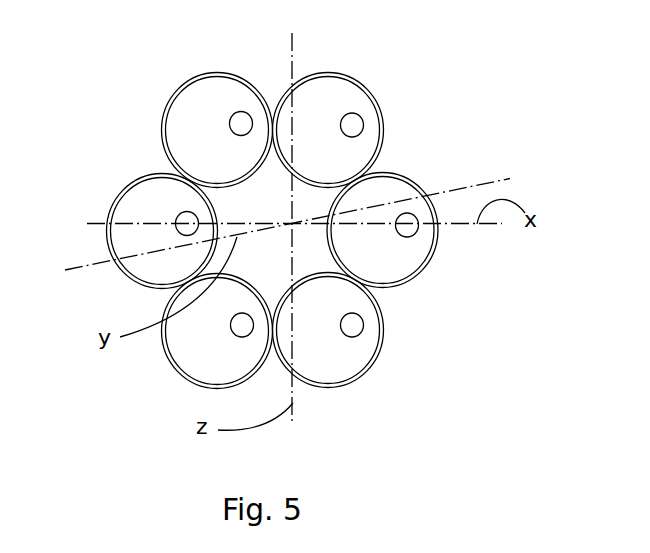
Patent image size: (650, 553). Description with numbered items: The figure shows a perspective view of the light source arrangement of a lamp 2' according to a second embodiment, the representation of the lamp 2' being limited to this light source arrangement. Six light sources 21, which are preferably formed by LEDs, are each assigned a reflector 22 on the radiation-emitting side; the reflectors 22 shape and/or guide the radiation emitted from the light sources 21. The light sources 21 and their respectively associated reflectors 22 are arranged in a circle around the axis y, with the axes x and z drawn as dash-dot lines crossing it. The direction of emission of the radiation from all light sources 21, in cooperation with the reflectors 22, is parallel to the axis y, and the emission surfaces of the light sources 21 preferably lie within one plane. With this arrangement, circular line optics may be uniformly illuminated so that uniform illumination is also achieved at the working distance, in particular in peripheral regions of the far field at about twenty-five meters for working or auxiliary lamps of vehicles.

The light source 21 is at (247, 122).
The reflector 22 is at (142, 198).
The lamp 2' is at (345, 230).